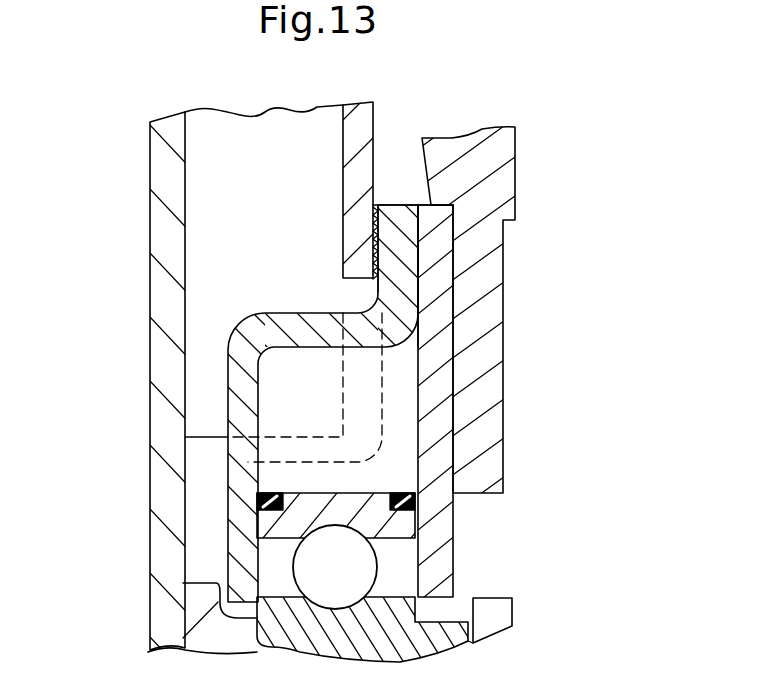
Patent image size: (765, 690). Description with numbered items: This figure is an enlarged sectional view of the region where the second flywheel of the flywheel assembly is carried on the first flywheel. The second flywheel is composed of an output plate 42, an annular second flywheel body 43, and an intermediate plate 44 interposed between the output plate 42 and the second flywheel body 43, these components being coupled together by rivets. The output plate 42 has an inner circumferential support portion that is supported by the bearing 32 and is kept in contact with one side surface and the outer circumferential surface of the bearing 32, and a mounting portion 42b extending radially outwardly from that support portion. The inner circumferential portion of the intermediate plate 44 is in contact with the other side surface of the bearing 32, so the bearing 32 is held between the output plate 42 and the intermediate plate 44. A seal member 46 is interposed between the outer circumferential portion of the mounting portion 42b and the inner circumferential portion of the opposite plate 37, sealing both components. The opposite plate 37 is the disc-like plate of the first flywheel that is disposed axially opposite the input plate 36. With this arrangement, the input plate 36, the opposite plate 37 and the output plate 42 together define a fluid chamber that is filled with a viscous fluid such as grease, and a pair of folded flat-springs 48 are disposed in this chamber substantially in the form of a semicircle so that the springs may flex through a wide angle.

The bearing 32 is at (360, 580).
The input plate 36 is at (163, 237).
The opposite plate 37 is at (367, 127).
The output plate 42 is at (231, 331).
The mounting portion 42b is at (400, 283).
The second flywheel body 43 is at (490, 354).
The intermediate plate 44 is at (437, 457).
The seal member 46 is at (383, 238).
The folded flat-springs 48 is at (233, 128).